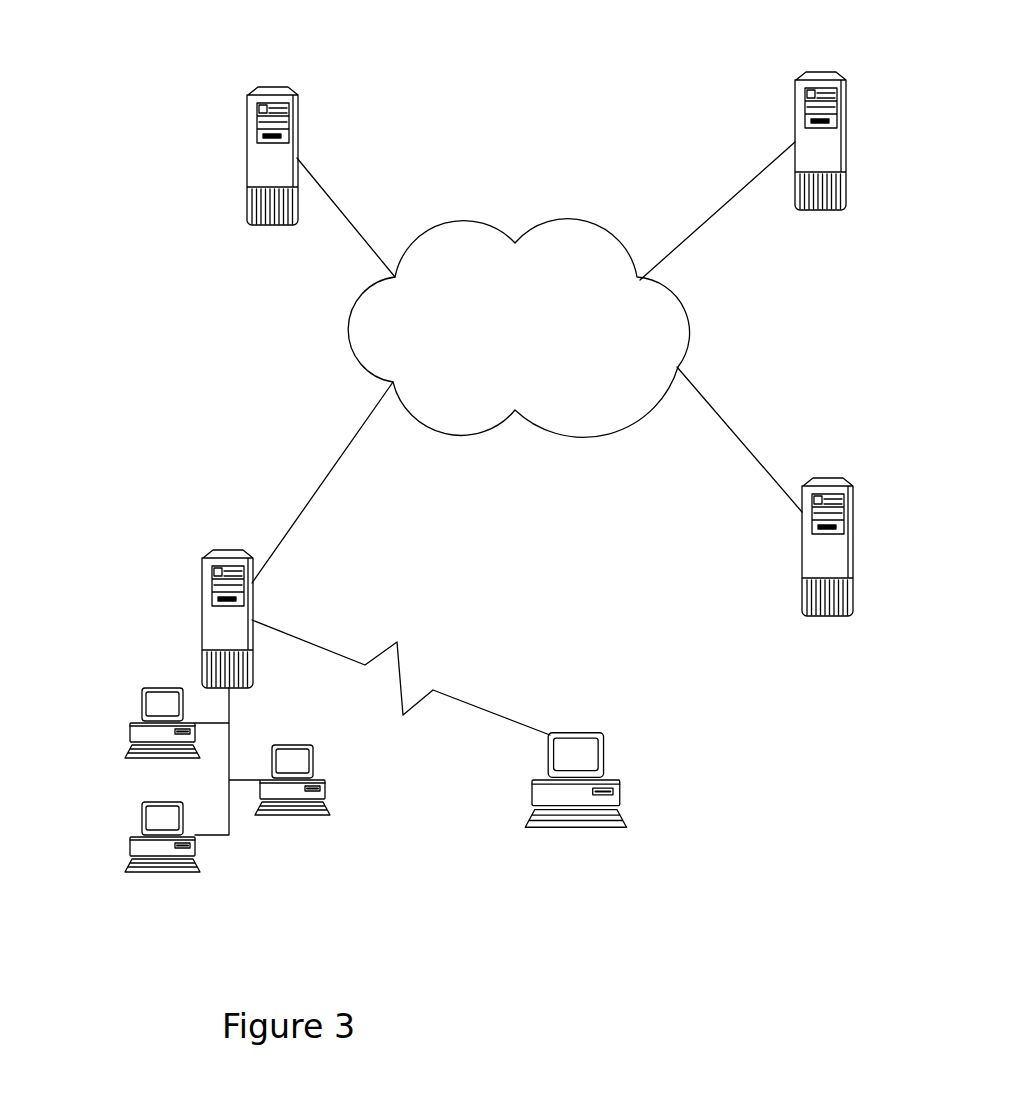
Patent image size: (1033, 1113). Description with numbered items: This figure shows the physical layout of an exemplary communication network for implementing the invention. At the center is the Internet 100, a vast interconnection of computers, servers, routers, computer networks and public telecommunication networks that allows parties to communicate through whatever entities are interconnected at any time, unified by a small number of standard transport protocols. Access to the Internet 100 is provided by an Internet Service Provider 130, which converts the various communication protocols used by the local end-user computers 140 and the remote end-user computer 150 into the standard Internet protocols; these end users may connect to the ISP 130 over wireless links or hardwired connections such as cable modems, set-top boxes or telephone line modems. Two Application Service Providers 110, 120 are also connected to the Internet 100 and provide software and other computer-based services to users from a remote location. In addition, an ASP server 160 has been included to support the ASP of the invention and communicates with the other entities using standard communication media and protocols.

The Internet 100 is at (430, 343).
The Application Service Provider 110 is at (273, 156).
The Application Service Provider 120 is at (827, 557).
The Internet Service Provider 130 is at (227, 628).
The end-user computers 140 is at (130, 843).
The end-user computer 150 is at (530, 795).
The ASP server 160 is at (820, 143).